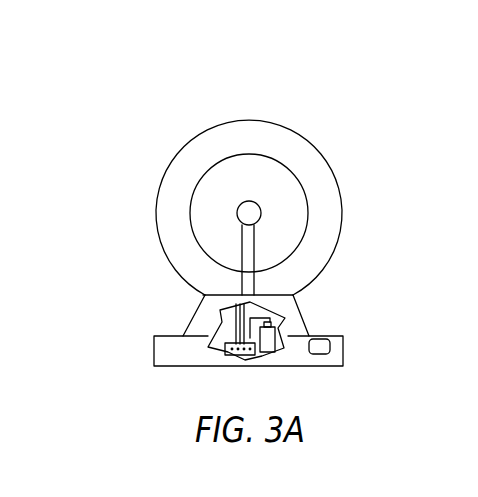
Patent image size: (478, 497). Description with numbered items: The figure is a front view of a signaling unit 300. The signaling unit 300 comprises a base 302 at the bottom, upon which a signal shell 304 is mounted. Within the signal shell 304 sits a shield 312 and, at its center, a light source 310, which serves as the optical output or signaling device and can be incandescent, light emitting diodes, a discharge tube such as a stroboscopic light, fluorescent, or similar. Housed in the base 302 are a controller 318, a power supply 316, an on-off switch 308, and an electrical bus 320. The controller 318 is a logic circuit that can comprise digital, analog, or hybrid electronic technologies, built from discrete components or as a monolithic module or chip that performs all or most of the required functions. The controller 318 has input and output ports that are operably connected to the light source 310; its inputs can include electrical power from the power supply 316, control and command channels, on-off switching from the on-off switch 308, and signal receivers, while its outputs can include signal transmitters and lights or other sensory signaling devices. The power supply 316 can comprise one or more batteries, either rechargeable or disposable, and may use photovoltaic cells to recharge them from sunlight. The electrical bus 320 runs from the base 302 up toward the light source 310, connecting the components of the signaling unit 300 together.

The signaling unit 300 is at (415, 230).
The base 302 is at (159, 336).
The signal shell 304 is at (193, 155).
The on-off switch 308 is at (322, 348).
The light source 310 is at (246, 218).
The shield 312 is at (263, 175).
The power supply 316 is at (267, 342).
The controller 318 is at (240, 352).
The electrical bus 320 is at (238, 328).